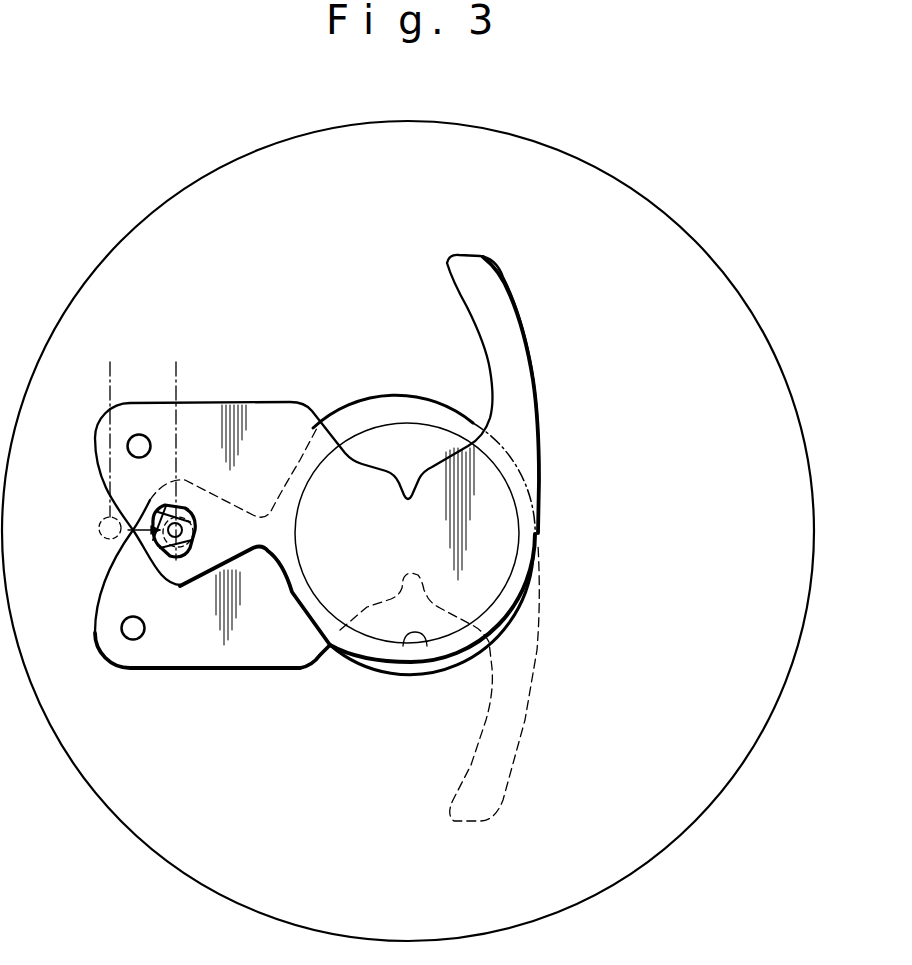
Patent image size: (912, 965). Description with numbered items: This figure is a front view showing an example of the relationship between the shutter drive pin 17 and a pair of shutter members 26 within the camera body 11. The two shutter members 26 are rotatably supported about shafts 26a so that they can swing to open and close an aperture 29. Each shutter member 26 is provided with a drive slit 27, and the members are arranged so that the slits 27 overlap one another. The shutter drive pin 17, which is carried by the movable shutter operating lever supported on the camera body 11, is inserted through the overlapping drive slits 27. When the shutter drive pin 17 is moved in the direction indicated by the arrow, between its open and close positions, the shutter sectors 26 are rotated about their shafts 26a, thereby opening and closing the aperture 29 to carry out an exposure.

The camera body 11 is at (172, 828).
The shutter members 26 is at (286, 420).
The shafts 26a is at (143, 434).
The shutter drive pin 17 is at (100, 527).
The drive slits 27 is at (191, 532).
The aperture 29 is at (408, 636).